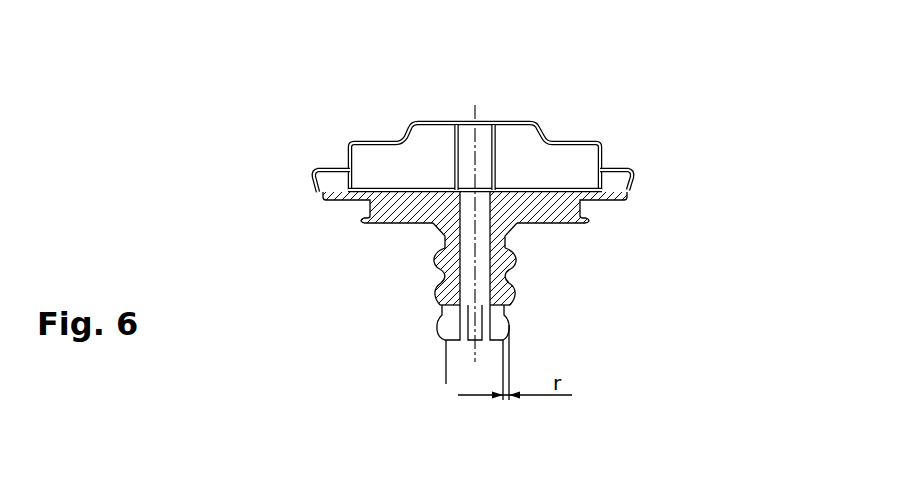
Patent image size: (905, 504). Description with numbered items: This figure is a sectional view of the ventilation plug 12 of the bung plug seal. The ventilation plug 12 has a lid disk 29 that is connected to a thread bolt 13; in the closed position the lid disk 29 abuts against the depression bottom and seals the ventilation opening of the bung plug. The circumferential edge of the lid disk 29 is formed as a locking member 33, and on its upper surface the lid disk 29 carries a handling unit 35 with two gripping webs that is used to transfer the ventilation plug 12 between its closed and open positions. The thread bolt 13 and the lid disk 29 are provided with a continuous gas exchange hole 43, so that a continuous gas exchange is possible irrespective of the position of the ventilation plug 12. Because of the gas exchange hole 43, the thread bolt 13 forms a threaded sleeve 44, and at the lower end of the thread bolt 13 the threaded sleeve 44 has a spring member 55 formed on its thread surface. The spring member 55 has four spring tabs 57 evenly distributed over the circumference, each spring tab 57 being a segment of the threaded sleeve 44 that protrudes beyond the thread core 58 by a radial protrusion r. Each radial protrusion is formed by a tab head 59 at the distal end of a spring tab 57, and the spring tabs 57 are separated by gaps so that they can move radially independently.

The ventilation plug 12 is at (601, 72).
The handling unit 35 is at (497, 122).
The locking member 33 is at (627, 194).
The lid disk 29 is at (636, 176).
The thread bolt 13 is at (527, 287).
The thread core 58 is at (441, 279).
The gas exchange hole 43 is at (491, 300).
The threaded sleeve 44 is at (432, 305).
The spring tabs 57 is at (505, 316).
The spring member 55 is at (423, 347).
The tab head 59 is at (446, 384).